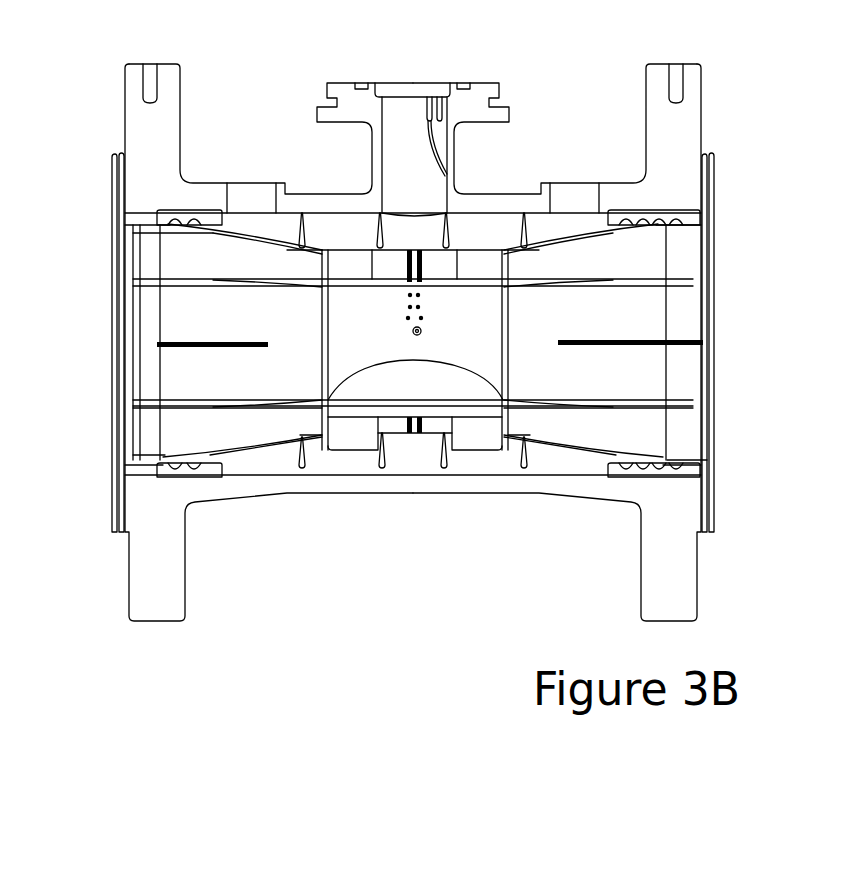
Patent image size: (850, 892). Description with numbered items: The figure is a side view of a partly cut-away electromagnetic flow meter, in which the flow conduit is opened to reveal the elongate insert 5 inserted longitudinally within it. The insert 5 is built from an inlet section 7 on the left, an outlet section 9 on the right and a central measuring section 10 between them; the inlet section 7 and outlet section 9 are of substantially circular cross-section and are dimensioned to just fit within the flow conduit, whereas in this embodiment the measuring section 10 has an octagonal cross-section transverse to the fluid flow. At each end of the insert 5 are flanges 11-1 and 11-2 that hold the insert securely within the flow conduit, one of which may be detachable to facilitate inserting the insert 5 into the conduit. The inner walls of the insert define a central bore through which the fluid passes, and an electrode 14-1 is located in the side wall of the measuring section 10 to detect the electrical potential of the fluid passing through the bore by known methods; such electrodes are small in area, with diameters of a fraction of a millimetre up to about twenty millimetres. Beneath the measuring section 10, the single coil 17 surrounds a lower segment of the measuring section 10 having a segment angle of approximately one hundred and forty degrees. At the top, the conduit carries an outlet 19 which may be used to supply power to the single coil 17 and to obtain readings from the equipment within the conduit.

The insert 5 is at (292, 415).
The inlet section 7 is at (150, 303).
The outlet section 9 is at (683, 315).
The central measuring section 10 is at (487, 301).
The flange 11-1 is at (119, 188).
The flange 11-2 is at (714, 246).
The electrode 14-1 is at (413, 331).
The single coil 17 is at (452, 380).
The outlet 19 is at (484, 86).